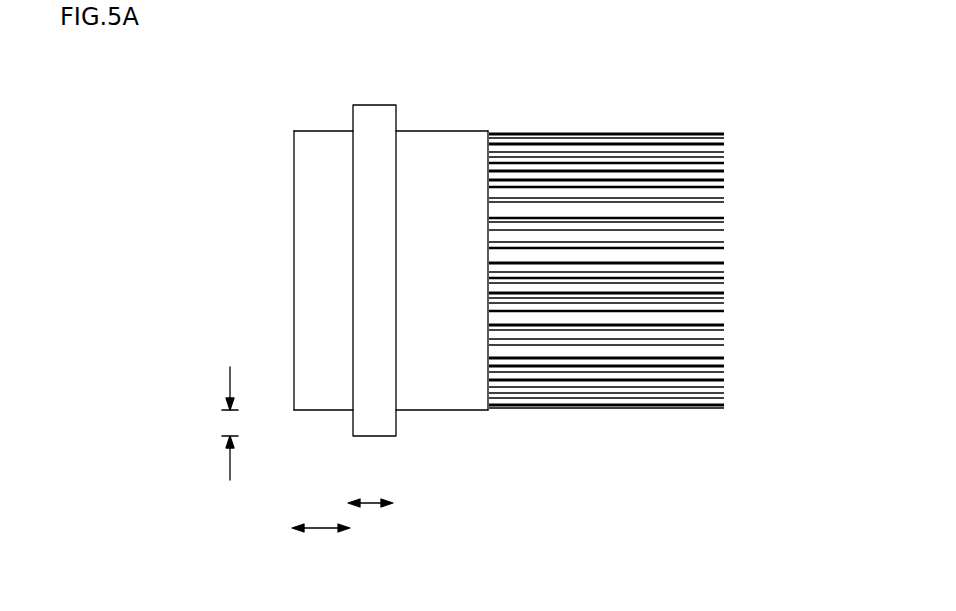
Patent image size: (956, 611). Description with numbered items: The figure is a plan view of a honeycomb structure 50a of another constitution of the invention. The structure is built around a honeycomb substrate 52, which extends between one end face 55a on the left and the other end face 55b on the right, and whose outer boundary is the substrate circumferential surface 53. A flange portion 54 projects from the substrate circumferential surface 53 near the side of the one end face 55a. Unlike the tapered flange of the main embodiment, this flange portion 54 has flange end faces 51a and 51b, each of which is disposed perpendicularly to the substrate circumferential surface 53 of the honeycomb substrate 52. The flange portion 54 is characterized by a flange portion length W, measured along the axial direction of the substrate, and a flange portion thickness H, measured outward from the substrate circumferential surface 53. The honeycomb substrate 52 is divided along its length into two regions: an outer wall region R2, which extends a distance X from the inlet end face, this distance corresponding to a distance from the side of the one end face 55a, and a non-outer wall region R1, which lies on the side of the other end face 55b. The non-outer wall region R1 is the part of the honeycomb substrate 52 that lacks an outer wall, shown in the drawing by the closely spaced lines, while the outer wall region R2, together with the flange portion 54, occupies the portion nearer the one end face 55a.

The honeycomb structure 50a is at (239, 155).
The flange end face 51a is at (352, 118).
The flange end face 51b is at (397, 108).
The honeycomb substrate 52 is at (455, 403).
The substrate circumferential surface 53 is at (481, 129).
The flange portion 54 is at (373, 112).
The one end face 55a is at (294, 267).
The other end face 55b is at (724, 255).
The non-outer wall region R1 is at (670, 436).
The outer wall region R2 is at (314, 432).
The flange portion thickness H is at (230, 421).
The distance from inlet end face X is at (322, 530).
The flange portion length W is at (372, 505).